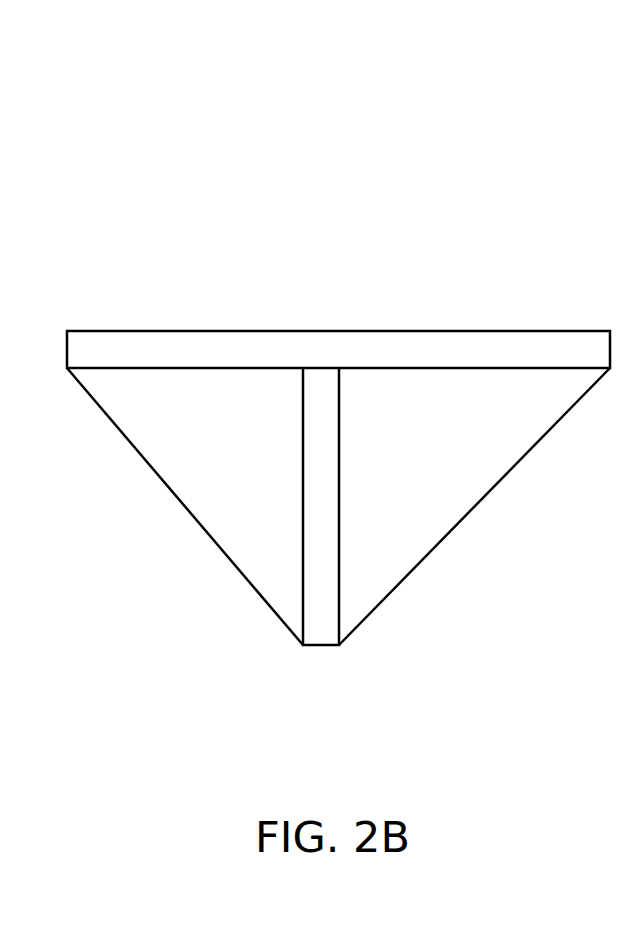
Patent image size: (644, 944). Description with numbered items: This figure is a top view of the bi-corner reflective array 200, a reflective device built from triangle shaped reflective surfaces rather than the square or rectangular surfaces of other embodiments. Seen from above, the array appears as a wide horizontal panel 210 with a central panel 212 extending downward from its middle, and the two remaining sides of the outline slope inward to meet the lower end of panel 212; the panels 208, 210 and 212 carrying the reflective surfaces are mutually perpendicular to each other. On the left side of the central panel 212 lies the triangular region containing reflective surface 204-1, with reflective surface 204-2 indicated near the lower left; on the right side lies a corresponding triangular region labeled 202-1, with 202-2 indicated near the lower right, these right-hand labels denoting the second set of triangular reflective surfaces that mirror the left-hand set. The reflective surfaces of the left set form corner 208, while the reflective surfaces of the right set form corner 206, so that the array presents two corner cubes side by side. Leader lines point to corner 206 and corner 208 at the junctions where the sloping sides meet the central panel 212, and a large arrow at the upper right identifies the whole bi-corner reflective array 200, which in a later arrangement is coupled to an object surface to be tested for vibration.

The bi-corner reflective array 200 is at (519, 163).
The panel 210 is at (392, 352).
The panel 212 is at (322, 424).
The corner 208 is at (300, 370).
The corner 206 is at (340, 372).
The reflective surface 204-1 is at (278, 540).
The right region 202-1 is at (422, 522).
The reflective surface 204-2 is at (303, 574).
The right bottom corner region 202-2 is at (339, 556).